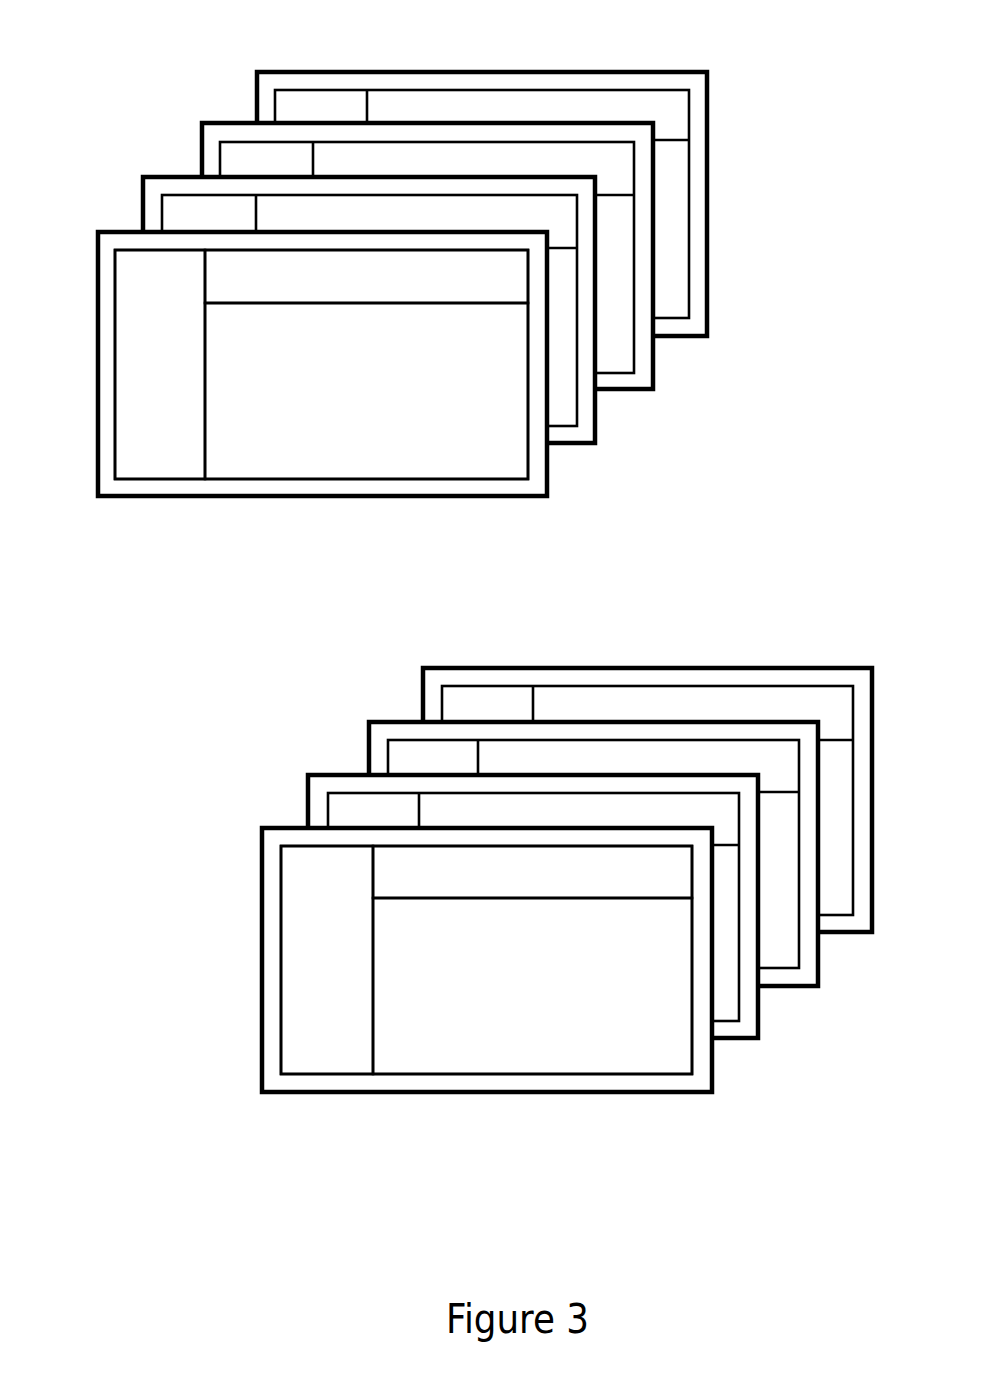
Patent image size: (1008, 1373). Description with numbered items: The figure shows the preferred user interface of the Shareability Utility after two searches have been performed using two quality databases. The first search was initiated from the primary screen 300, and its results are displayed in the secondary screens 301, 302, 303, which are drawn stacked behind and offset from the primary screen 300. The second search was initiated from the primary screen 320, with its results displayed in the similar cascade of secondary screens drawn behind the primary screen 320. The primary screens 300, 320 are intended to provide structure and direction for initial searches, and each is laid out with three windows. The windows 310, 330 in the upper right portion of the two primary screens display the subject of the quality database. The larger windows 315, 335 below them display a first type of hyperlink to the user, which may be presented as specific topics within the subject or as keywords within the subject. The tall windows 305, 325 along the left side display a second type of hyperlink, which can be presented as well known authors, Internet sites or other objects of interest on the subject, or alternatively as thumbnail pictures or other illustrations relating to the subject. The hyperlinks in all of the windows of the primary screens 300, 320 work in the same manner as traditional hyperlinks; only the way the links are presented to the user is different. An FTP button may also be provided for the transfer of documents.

The primary screen 300 is at (296, 339).
The secondary screen 301 is at (150, 197).
The secondary screen 302 is at (205, 143).
The secondary screen 303 is at (265, 90).
The window 305 is at (165, 440).
The window 310 is at (508, 288).
The window 315 is at (509, 440).
The primary screen 320 is at (452, 960).
The window 325 is at (328, 1035).
The window 330 is at (670, 883).
The window 335 is at (672, 1035).